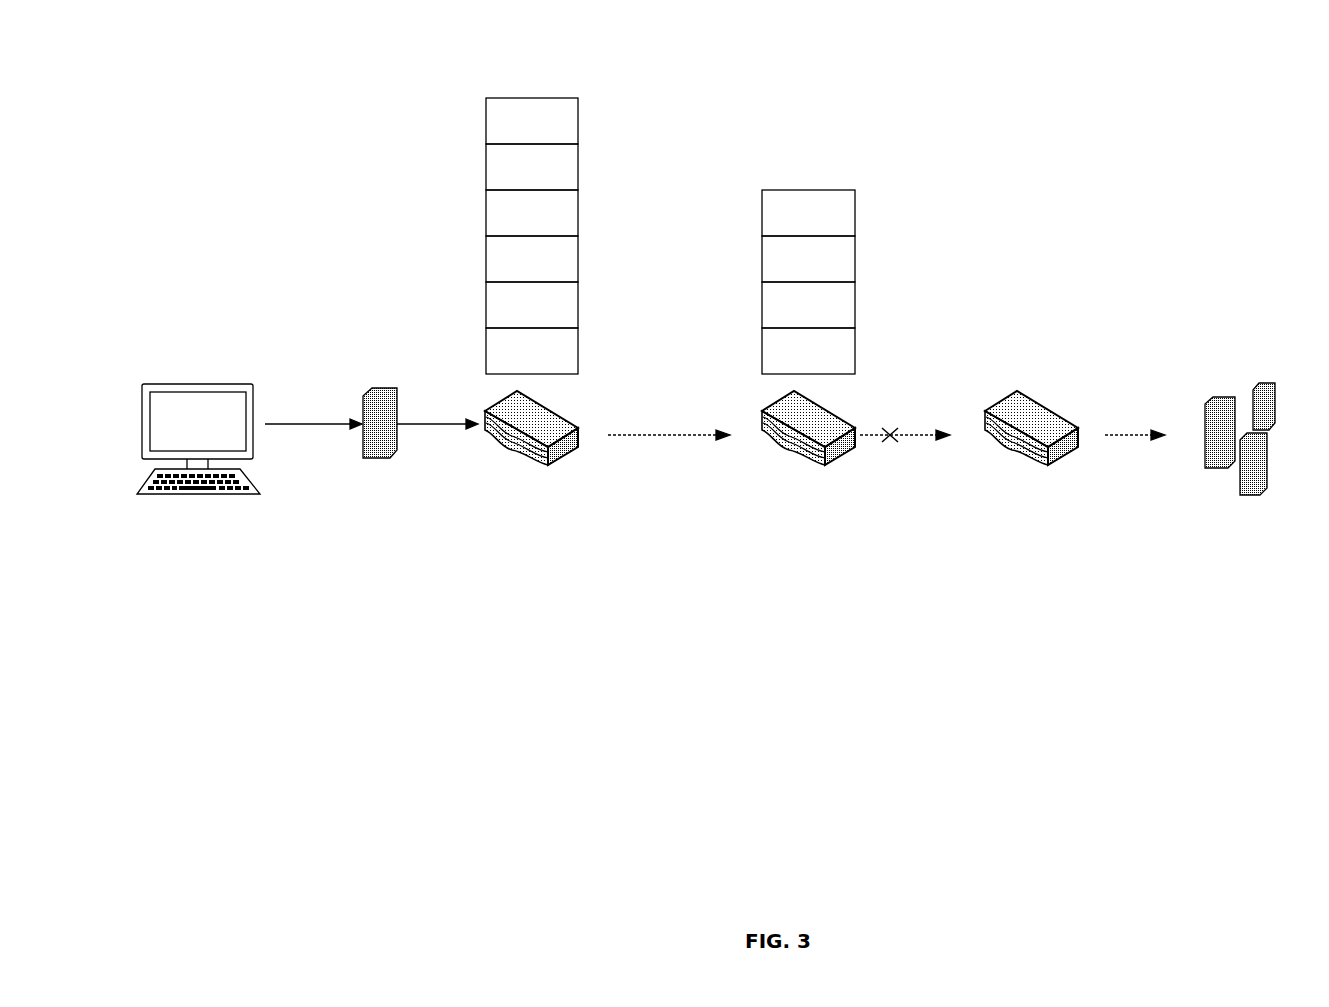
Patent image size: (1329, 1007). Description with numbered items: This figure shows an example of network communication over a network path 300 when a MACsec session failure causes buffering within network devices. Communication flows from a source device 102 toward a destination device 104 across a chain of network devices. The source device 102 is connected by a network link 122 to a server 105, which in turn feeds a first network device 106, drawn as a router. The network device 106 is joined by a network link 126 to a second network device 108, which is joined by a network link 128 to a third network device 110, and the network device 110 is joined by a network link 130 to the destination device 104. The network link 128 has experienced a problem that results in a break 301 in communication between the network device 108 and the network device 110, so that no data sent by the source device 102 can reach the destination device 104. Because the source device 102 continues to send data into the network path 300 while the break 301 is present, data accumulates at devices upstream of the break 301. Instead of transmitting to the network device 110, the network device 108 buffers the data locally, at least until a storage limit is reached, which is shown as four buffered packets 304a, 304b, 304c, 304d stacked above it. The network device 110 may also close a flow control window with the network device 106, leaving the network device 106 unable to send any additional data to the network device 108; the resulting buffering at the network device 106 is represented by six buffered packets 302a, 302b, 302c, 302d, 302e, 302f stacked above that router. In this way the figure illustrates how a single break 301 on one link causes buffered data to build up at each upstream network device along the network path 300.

The network path 300 is at (200, 55).
The source device 102 is at (200, 493).
The network link 122 is at (283, 418).
The server 105 is at (380, 392).
The network device 106 is at (546, 466).
The buffered packet 302a is at (578, 128).
The buffered packet 302b is at (578, 172).
The buffered packet 302c is at (578, 218).
The buffered packet 302d is at (578, 262).
The buffered packet 302e is at (578, 303).
The buffered packet 302f is at (578, 348).
The network link 126 is at (667, 437).
The network device 108 is at (823, 466).
The buffered packet 304a is at (855, 222).
The buffered packet 304b is at (855, 260).
The buffered packet 304c is at (855, 307).
The buffered packet 304d is at (855, 352).
The network link 128 is at (910, 433).
The break 301 is at (887, 442).
The network device 110 is at (1060, 466).
The network link 130 is at (1133, 437).
The destination device 104 is at (1241, 491).